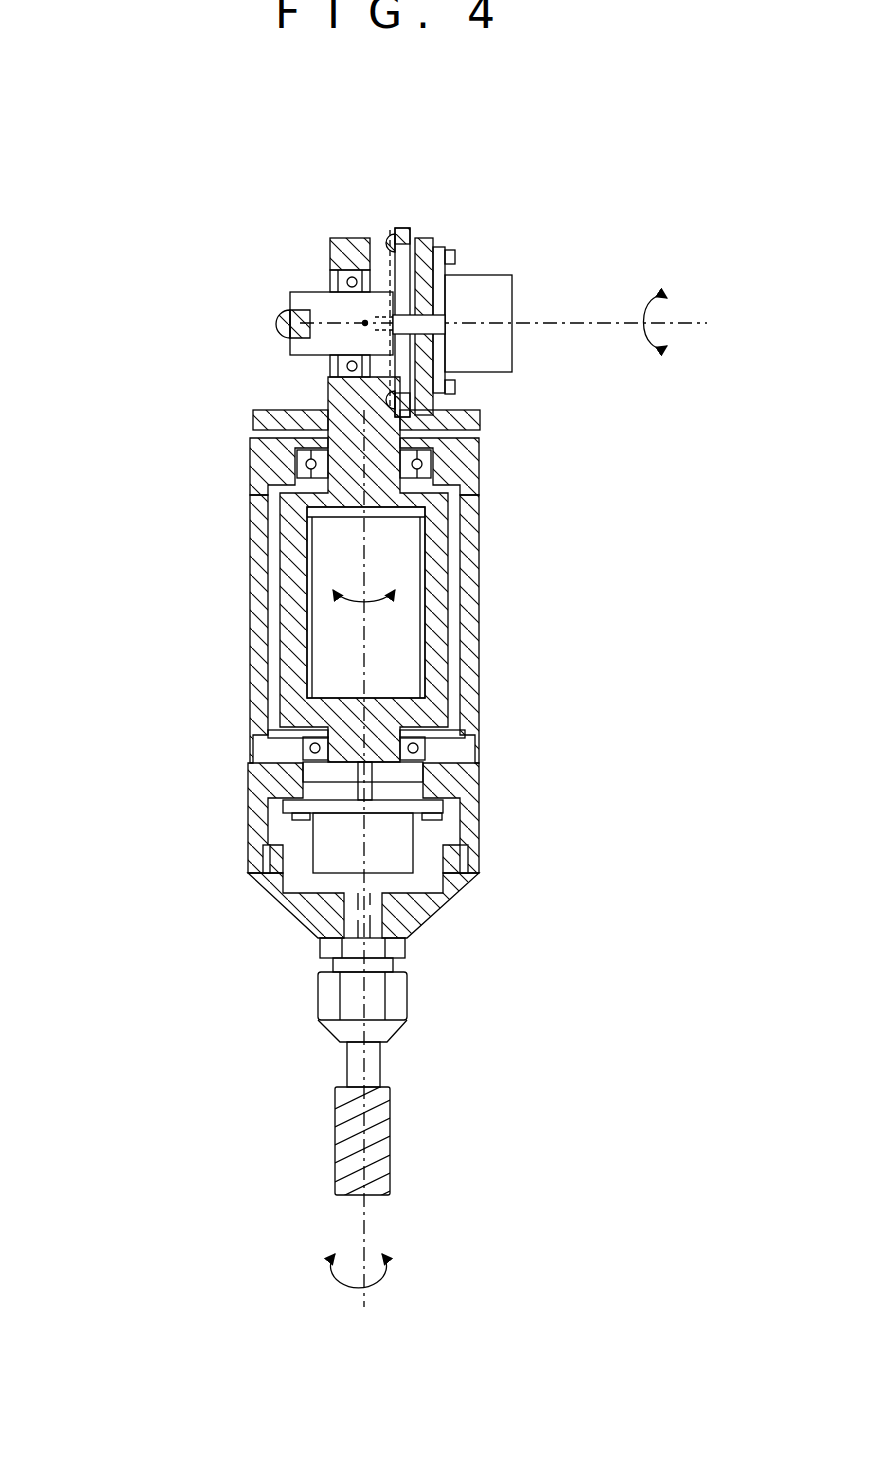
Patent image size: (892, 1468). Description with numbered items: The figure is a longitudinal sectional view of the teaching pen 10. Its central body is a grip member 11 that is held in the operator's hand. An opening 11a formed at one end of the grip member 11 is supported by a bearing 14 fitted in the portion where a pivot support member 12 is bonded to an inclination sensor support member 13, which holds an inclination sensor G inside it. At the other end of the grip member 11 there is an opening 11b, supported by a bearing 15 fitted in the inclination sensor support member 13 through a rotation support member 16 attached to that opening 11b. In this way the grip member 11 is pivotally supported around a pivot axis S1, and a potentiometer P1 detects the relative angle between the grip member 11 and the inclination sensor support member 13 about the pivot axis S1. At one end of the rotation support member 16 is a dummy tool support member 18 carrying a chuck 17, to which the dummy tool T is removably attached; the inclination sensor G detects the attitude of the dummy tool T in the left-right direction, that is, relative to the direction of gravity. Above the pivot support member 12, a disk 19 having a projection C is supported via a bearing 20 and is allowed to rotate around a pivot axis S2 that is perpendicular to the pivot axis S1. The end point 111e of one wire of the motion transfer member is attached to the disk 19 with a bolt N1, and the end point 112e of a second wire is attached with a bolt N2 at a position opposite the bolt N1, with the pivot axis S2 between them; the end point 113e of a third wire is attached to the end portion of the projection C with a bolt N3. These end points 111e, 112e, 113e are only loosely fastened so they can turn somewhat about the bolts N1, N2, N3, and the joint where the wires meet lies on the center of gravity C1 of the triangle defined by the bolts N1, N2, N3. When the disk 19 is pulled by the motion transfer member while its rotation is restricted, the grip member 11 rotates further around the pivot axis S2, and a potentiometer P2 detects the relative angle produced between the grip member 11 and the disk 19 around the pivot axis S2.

The teaching pen 10 is at (198, 316).
The grip member 11 is at (468, 665).
The opening 11a is at (255, 438).
The opening 11b is at (280, 718).
The pivot support member 12 is at (480, 411).
The inclination sensor support member 13 is at (443, 538).
The bearing 14 is at (480, 452).
The bearing 15 is at (305, 752).
The rotation support member 16 is at (465, 777).
The chuck 17 is at (393, 998).
The dummy tool support member 18 is at (290, 905).
The disk 19 is at (409, 226).
The bearing 20 is at (330, 275).
The projection C is at (300, 346).
The center of gravity C1 is at (366, 322).
The inclination sensor G is at (397, 625).
The bolt N1 is at (388, 238).
The bolt N2 is at (388, 398).
The bolt N3 is at (280, 318).
The end point 111e is at (393, 233).
The end point 112e is at (393, 402).
The end point 113e is at (290, 335).
The potentiometer P1 is at (395, 860).
The potentiometer P2 is at (503, 292).
The pivot axis S1 is at (359, 1302).
The pivot axis S2 is at (698, 322).
The dummy tool T is at (380, 1140).